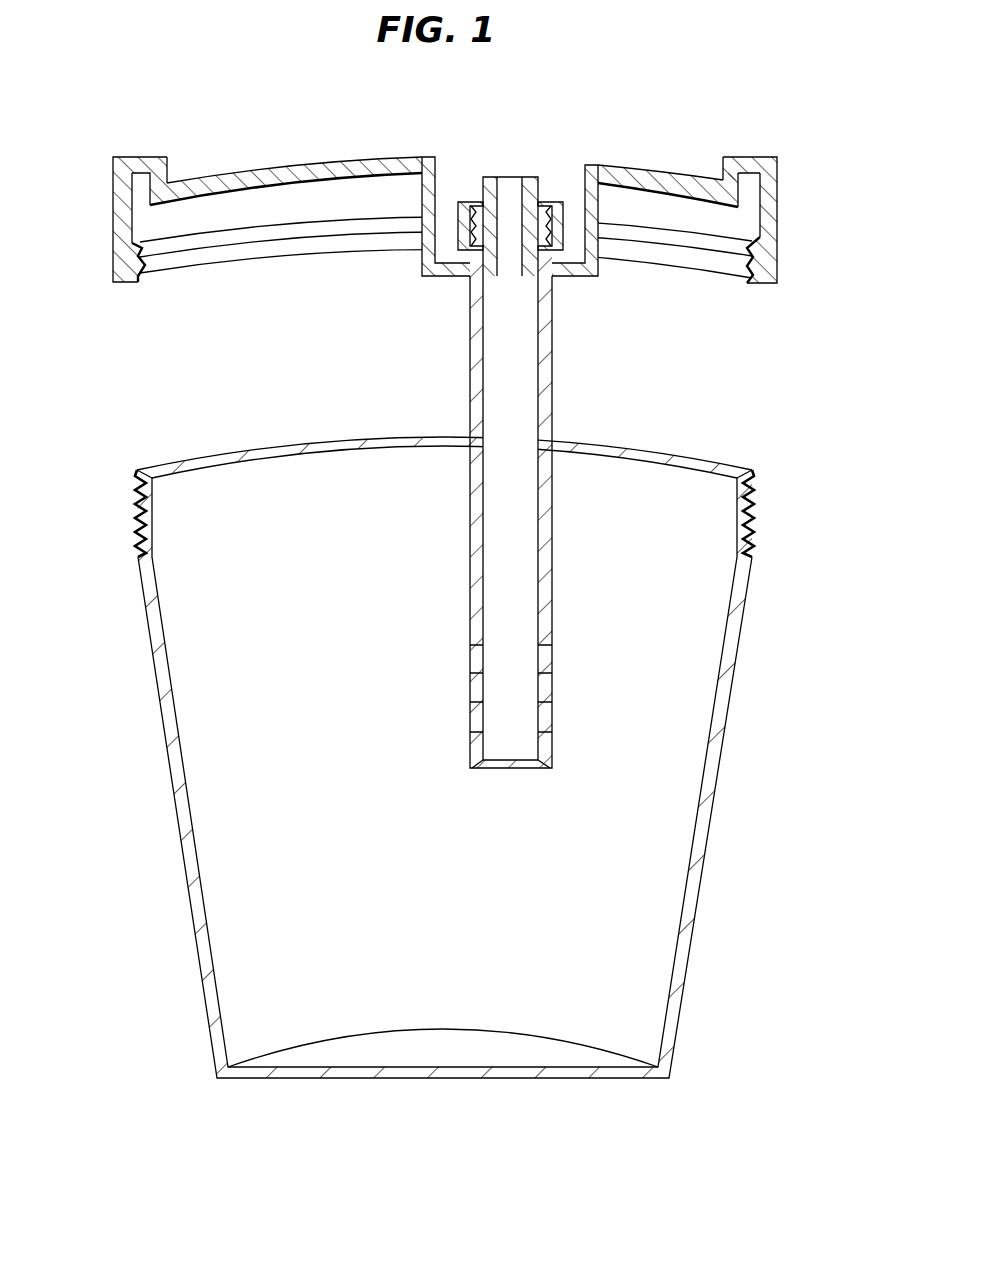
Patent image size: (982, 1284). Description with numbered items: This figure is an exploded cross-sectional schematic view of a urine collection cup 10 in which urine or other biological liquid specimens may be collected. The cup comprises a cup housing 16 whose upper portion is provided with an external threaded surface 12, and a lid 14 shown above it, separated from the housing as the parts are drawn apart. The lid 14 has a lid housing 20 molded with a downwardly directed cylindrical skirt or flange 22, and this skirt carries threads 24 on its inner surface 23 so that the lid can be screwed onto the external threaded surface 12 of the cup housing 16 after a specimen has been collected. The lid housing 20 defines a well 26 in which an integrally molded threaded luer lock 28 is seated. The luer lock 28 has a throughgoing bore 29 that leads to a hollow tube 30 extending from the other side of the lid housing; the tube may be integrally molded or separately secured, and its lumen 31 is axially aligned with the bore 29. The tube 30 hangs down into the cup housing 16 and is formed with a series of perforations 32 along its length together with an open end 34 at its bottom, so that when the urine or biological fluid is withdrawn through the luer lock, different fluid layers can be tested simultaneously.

The urine collection cup 10 is at (483, 584).
The external threaded surface 12 is at (755, 520).
The lid 14 is at (465, 217).
The cup housing 16 is at (700, 848).
The lid housing 20 is at (306, 160).
The skirt or flange 22 is at (112, 234).
The inner surface 23 is at (247, 238).
The threads 24 is at (143, 270).
The well 26 is at (440, 170).
The luer lock 28 is at (543, 177).
The bore 29 is at (510, 252).
The hollow tube 30 is at (515, 541).
The lumen 31 is at (517, 392).
The perforations 32 is at (562, 643).
The open end 34 is at (510, 768).